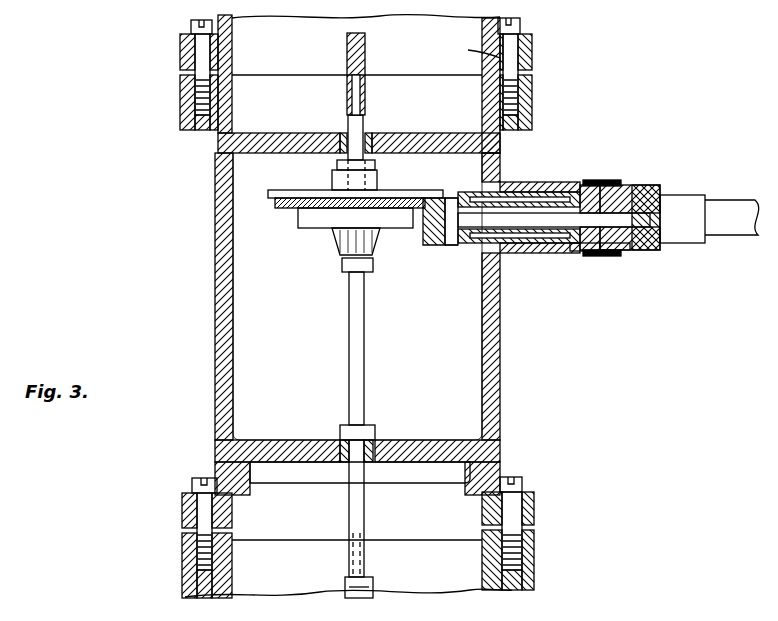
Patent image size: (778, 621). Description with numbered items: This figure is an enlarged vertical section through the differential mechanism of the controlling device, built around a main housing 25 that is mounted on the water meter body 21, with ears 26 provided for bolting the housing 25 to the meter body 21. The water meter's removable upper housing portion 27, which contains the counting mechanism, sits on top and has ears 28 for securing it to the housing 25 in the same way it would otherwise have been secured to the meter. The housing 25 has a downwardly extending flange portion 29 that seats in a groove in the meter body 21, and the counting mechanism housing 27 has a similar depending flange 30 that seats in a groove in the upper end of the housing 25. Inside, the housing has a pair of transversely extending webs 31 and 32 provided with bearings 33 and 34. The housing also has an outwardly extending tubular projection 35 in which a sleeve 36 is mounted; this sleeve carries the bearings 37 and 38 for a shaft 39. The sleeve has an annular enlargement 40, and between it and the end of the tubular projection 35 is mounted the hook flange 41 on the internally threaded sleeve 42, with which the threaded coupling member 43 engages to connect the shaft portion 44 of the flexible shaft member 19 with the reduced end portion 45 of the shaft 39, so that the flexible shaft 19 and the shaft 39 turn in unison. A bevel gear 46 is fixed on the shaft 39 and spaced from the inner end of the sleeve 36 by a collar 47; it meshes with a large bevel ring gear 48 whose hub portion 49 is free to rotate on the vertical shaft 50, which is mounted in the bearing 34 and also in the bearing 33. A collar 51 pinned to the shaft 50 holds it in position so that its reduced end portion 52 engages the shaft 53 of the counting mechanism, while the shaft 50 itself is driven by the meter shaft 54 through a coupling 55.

The flexible shaft member 19 is at (712, 210).
The water meter body 21 is at (535, 556).
The main housing 25 is at (500, 340).
The ears 26 is at (182, 512).
The upper housing portion 27 is at (532, 62).
The ears 28 is at (185, 58).
The downwardly extending flange portion 29 is at (232, 528).
The depending flange 30 is at (232, 72).
The transversely extending web 31 is at (405, 447).
The transversely extending web 32 is at (400, 145).
The bearing 33 is at (372, 470).
The bearing 34 is at (378, 140).
The tubular projection 35 is at (540, 255).
The sleeve 36 is at (525, 190).
The bearing 37 is at (470, 243).
The bearing 38 is at (585, 250).
The shaft 39 is at (545, 213).
The annular enlargement 40 is at (600, 185).
The hook flange 41 is at (578, 253).
The internally threaded sleeve 42 is at (615, 256).
The threaded coupling member 43 is at (642, 190).
The shaft portion 44 is at (656, 240).
The reduced end portion 45 is at (640, 250).
The bevel gear 46 is at (445, 245).
The collar 47 is at (452, 200).
The large bevel ring gear 48 is at (280, 205).
The hub portion 49 is at (377, 181).
The shaft 50 is at (357, 130).
The collar 51 is at (345, 432).
The reduced end portion 52 is at (360, 92).
The shaft of the counting mechanism 53 is at (365, 57).
The meter shaft 54 is at (372, 588).
The coupling 55 is at (372, 545).